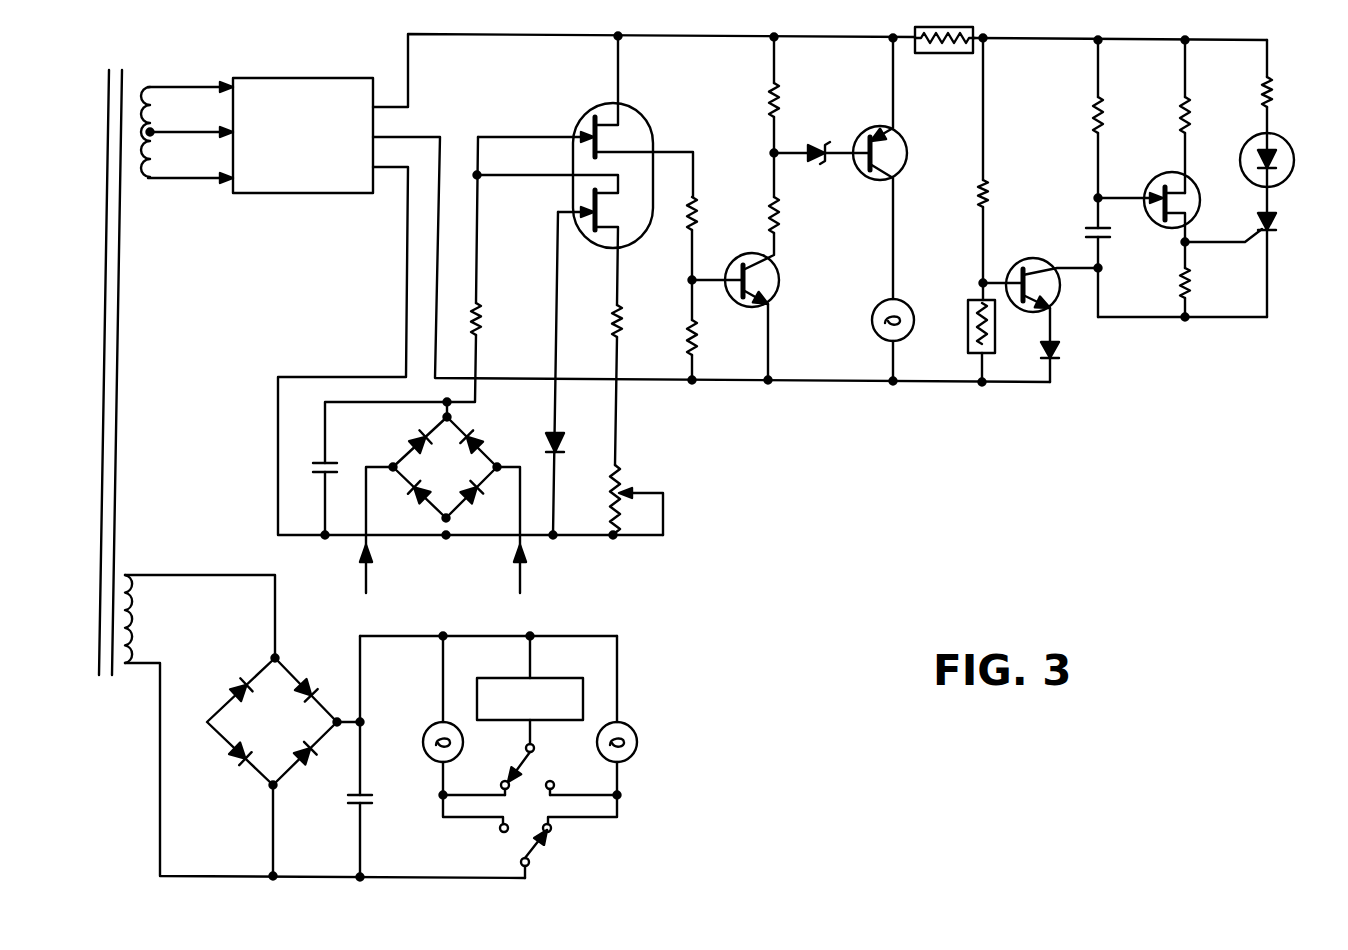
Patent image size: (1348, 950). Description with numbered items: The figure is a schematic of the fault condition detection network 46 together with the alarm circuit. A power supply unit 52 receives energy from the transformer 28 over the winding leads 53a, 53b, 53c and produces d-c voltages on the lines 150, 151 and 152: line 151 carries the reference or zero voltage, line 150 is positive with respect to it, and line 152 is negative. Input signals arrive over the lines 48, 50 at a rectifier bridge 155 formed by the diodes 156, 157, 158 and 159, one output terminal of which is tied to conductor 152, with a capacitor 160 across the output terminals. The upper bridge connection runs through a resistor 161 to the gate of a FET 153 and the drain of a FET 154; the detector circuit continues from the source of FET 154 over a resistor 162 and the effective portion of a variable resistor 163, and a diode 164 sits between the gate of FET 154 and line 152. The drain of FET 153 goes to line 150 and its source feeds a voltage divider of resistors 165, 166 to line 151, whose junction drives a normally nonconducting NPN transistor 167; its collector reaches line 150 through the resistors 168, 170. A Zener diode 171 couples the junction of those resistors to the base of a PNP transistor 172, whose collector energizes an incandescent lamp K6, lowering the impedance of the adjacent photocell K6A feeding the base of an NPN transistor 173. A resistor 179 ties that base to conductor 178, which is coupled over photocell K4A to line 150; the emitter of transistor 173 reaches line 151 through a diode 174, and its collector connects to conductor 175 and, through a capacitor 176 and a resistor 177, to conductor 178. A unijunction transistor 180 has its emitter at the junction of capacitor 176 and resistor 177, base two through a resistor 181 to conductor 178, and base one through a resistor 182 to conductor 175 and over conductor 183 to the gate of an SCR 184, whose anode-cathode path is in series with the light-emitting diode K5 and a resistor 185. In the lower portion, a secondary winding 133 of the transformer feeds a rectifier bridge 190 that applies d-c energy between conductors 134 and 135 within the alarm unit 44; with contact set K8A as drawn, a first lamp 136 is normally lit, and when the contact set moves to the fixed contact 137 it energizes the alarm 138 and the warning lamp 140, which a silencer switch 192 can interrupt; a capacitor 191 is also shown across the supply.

The transformer 28 is at (63, 386).
The alarm unit 44 is at (484, 624).
The fault condition detection network 46 is at (986, 535).
The line 48 is at (527, 530).
The line 50 is at (364, 530).
The power supply unit 52 is at (303, 124).
The line 53a is at (187, 119).
The line 53b is at (190, 122).
The line 53c is at (190, 169).
The secondary winding 133 is at (149, 617).
The conductor 134 is at (488, 625).
The conductor 135 is at (325, 772).
The first lamp 136 is at (615, 717).
The fixed contact 137 is at (500, 832).
The alarm 138 is at (530, 690).
The lamp 140 is at (444, 717).
The line 150 is at (414, 64).
The line 151 is at (438, 136).
The line 152 is at (406, 243).
The FET 153 is at (584, 168).
The FET 154 is at (567, 362).
The rectifier bridge 155 is at (445, 462).
The diode 156 is at (402, 437).
The diode 157 is at (491, 437).
The diode 158 is at (402, 501).
The diode 159 is at (489, 501).
The capacitor 160 is at (314, 468).
The resistor 161 is at (483, 354).
The resistor 162 is at (598, 385).
The variable resistor 163 is at (616, 502).
The diode 164 is at (576, 486).
The resistor 165 is at (714, 258).
The resistor 166 is at (675, 352).
The NPN transistor 167 is at (757, 308).
The resistor 168 is at (794, 175).
The resistor 170 is at (755, 75).
The Zener diode 171 is at (822, 137).
The PNP transistor 172 is at (901, 167).
The NPN transistor 173 is at (1040, 289).
The diode 174 is at (1071, 361).
The conductor 175 is at (1143, 317).
The capacitor 176 is at (1079, 263).
The resistor 177 is at (1079, 133).
The conductor 178 is at (1168, 41).
The resistor 179 is at (1000, 168).
The unijunction transistor 180 is at (1149, 214).
The resistor 181 is at (1165, 115).
The resistor 182 is at (1164, 292).
The conductor 183 is at (1222, 244).
The silicon controlled rectifier 184 is at (1288, 263).
The resistor 185 is at (1289, 95).
The rectifier bridge 190 is at (285, 766).
The capacitor 191 is at (379, 756).
The silencer switch 192 is at (533, 760).
The photocell K4A is at (945, 54).
The light-emitting diode K5 is at (1283, 173).
The incandescent lamp K6 is at (874, 342).
The photocell K6A is at (968, 330).
The contact set K8A is at (569, 836).